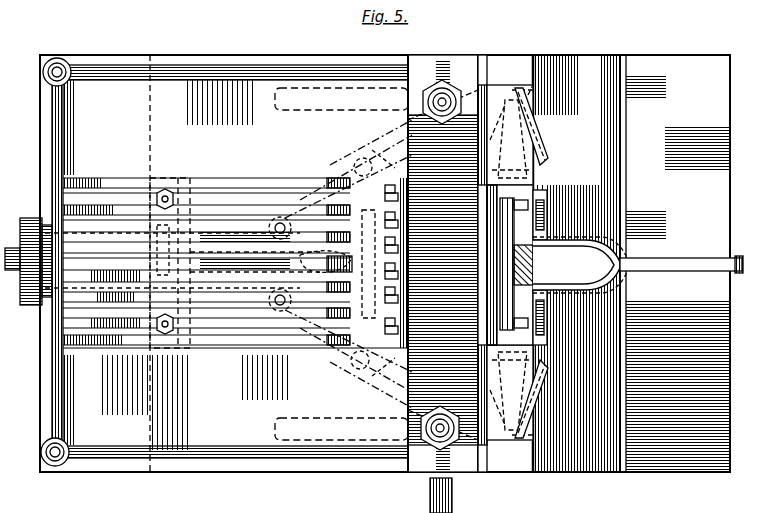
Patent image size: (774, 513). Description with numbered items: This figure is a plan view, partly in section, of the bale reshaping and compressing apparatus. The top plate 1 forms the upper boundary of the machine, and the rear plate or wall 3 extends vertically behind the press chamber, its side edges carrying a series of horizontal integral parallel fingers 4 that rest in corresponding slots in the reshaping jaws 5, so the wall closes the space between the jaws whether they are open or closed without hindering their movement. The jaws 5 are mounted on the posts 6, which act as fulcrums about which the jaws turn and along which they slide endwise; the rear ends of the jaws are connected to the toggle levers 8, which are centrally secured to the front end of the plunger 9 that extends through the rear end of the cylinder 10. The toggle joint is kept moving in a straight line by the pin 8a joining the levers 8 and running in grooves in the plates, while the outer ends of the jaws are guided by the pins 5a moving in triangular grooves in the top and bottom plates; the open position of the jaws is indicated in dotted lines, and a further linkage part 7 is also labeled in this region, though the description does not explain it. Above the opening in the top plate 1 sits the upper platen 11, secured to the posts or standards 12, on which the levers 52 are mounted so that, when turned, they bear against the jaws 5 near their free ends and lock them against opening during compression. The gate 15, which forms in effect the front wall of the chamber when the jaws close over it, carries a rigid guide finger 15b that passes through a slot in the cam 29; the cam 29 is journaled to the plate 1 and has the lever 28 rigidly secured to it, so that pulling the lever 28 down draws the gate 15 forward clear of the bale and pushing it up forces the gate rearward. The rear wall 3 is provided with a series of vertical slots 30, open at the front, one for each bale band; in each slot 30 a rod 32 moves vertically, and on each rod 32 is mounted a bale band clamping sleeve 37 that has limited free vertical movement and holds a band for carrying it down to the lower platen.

The top plate 1 is at (278, 136).
The rear plate or wall 3 is at (380, 330).
The horizontal integral parallel fingers 4 is at (377, 276).
The reshaping jaws 5 is at (553, 130).
The pins 5a is at (515, 95).
The posts 6 is at (354, 165).
The link 7 is at (385, 150).
The toggle levers 8 is at (325, 236).
The pin 8a is at (352, 262).
The plunger 9 is at (240, 275).
The cylinder 10 is at (135, 290).
The upper platen 11 is at (443, 263).
The posts or standards 12 is at (450, 92).
The gate 15 is at (500, 262).
The guide finger 15b is at (560, 262).
The lever 28 is at (700, 262).
The cam 29 is at (545, 220).
The vertical slots 30 is at (386, 290).
The rods or posts 32 is at (395, 180).
The bale band clamping sleeve 37 is at (385, 196).
The levers 52 is at (338, 108).